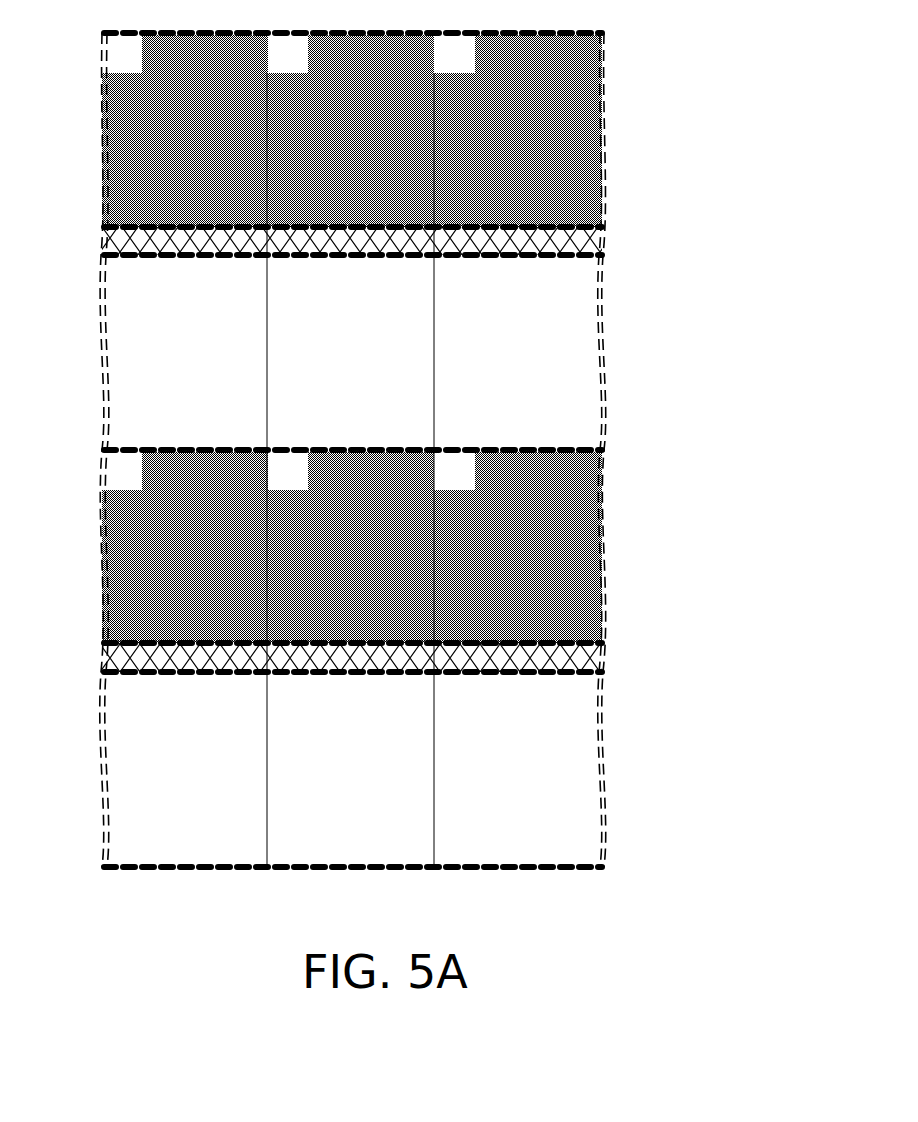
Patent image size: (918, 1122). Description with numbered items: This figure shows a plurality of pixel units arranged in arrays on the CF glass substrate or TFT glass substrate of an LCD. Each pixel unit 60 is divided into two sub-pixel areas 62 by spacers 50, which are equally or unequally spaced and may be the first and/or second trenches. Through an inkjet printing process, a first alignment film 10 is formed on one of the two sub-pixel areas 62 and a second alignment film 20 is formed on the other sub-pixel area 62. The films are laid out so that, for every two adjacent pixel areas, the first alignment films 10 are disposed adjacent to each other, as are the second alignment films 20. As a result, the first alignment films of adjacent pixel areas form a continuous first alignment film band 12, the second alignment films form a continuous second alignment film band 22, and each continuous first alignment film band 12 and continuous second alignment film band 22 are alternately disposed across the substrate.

The first alignment film 10 is at (126, 128).
The continuous first alignment film band 12 is at (618, 93).
The second alignment film 20 is at (126, 360).
The continuous second alignment film band 22 is at (618, 343).
The spacer 50 is at (120, 246).
The pixel unit 60 is at (90, 617).
The sub-pixel area 62 is at (144, 631).